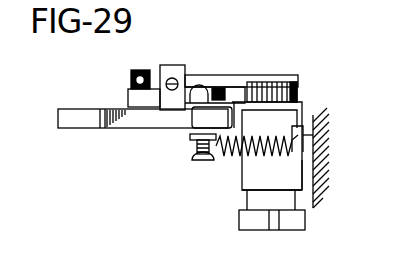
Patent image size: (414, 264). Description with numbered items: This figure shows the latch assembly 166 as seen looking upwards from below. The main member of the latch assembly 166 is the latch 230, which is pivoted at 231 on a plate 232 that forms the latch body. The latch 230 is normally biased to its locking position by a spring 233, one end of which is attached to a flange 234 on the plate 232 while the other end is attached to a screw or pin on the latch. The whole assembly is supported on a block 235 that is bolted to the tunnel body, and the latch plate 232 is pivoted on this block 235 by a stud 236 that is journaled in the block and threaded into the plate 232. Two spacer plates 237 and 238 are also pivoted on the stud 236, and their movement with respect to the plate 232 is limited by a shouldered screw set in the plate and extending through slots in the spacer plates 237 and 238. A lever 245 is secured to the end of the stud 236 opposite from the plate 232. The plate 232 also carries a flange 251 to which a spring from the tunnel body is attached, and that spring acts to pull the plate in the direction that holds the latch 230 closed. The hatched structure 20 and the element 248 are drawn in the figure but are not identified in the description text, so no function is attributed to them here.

The wall 20 is at (330, 160).
The latch assembly 166 is at (120, 150).
The latch 230 is at (78, 126).
The pivot 231 is at (221, 88).
The plate 232 is at (302, 105).
The spring 233 is at (234, 136).
The flange 234 is at (316, 135).
The block 235 is at (300, 186).
The stud 236 is at (250, 200).
The spacer plate 237 is at (128, 96).
The spacer plate 238 is at (247, 82).
The lever 245 is at (290, 230).
The pivot block 248 is at (131, 76).
The flange 251 is at (173, 66).